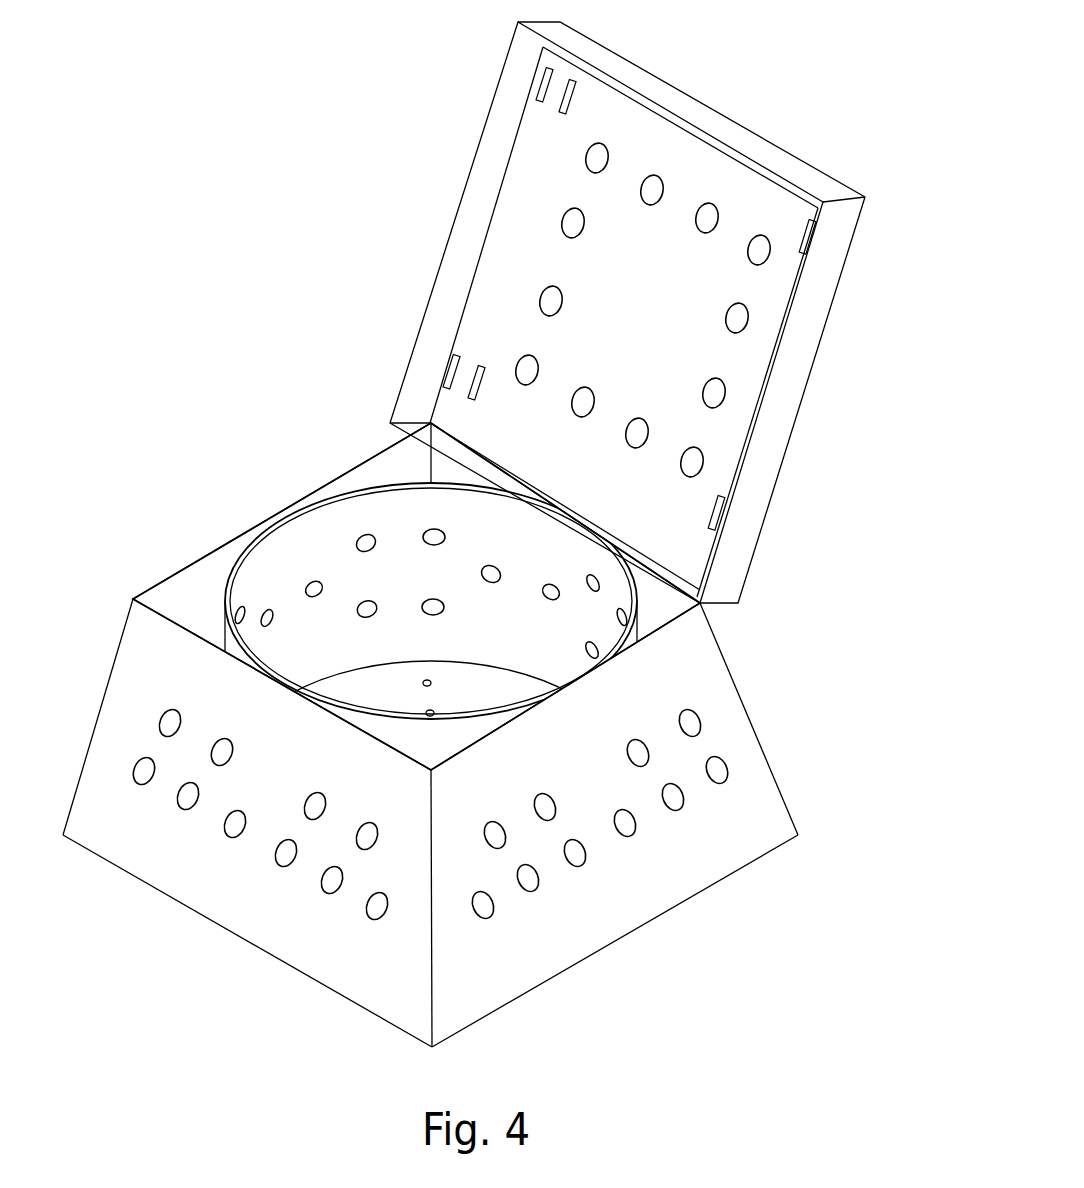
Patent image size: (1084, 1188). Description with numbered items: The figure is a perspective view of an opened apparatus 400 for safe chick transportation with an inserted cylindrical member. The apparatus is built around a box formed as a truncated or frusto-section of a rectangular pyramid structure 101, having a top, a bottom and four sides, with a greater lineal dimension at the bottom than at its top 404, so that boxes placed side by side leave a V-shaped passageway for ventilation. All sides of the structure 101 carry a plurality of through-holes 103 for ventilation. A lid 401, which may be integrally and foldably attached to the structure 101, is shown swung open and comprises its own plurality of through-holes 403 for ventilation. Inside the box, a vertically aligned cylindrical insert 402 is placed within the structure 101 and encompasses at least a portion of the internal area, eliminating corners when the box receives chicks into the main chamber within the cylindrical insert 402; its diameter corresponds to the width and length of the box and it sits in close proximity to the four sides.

The opened apparatus for safe chick transportation 400 is at (182, 163).
The lid 401 is at (782, 433).
The cylindrical insert 402 is at (337, 535).
The through-holes 403 is at (573, 212).
The top 404 is at (193, 565).
The rectangular pyramid structure 101 is at (755, 738).
The through-holes 103 is at (673, 810).